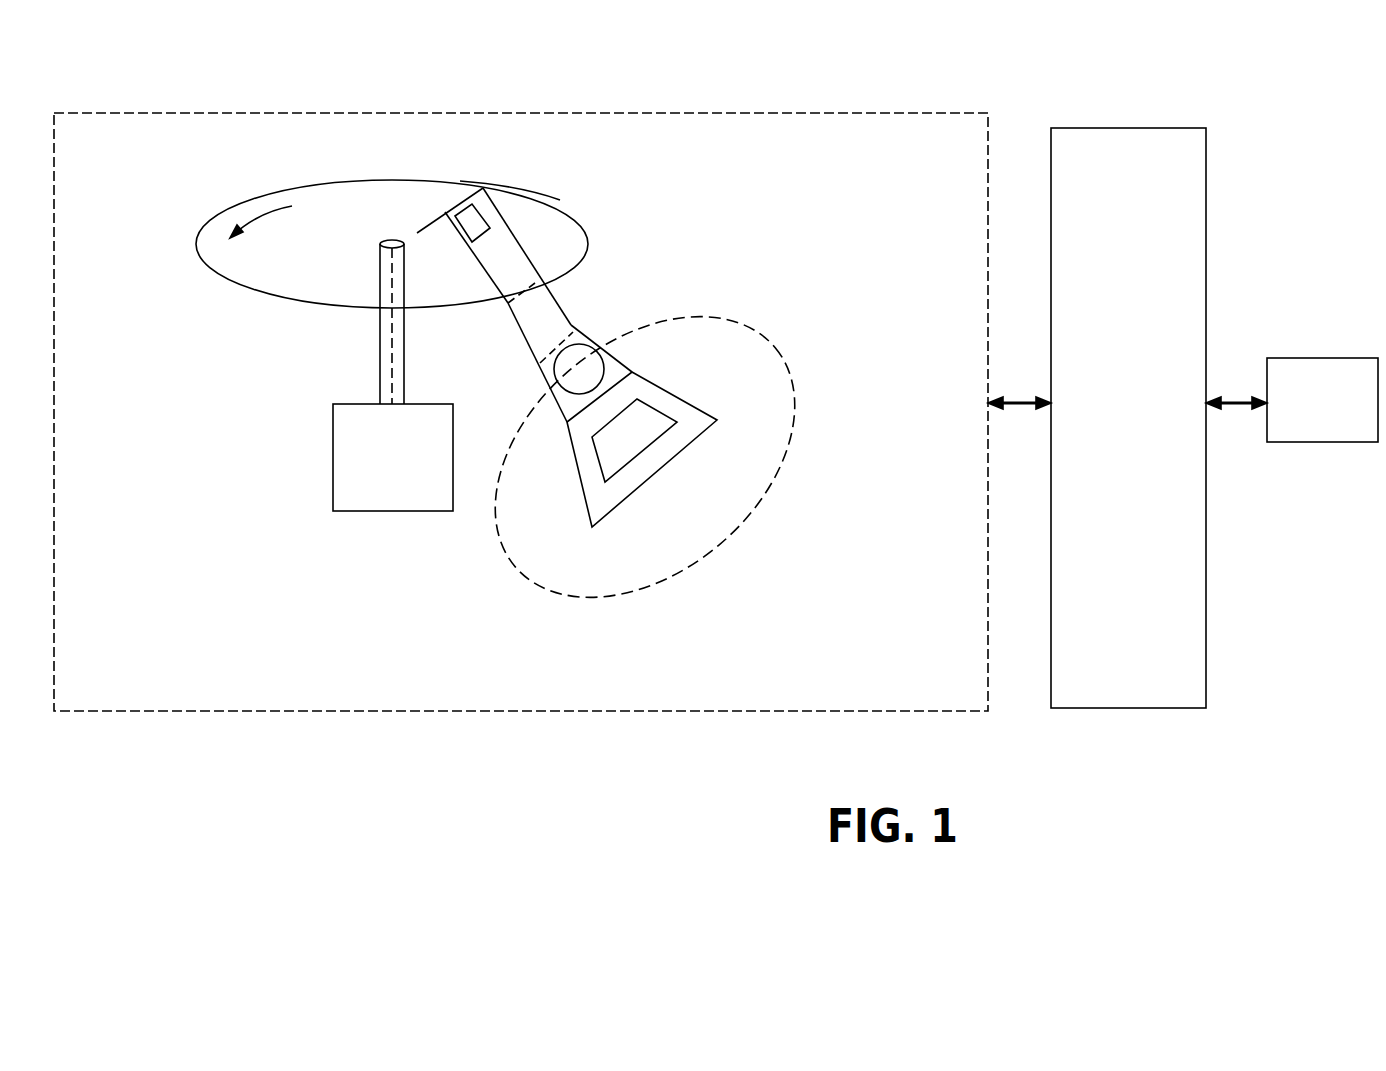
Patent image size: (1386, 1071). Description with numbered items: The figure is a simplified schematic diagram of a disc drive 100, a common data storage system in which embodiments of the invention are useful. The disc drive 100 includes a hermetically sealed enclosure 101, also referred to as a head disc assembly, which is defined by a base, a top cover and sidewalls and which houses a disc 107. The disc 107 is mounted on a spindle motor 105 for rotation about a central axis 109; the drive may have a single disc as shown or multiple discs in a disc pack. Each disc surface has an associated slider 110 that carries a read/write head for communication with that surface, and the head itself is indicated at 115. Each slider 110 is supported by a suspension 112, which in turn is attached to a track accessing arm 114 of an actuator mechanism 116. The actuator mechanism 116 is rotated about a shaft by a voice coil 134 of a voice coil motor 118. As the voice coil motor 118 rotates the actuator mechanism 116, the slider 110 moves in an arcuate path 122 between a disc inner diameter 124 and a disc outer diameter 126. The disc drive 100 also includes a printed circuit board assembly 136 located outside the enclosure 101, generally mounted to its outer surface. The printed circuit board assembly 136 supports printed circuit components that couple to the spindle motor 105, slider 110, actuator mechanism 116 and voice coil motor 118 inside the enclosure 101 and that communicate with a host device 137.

The disc drive 100 is at (1162, 62).
The enclosure 101 is at (617, 712).
The spindle motor 105 is at (333, 487).
The disc 107 is at (218, 253).
The central axis 109 is at (392, 322).
The slider 110 is at (466, 226).
The suspension 112 is at (505, 267).
The track accessing arm 114 is at (545, 318).
The read/write head slider 115 is at (466, 224).
The actuator mechanism 116 is at (548, 364).
The voice coil motor 118 is at (594, 585).
The arcuate path 122 is at (418, 233).
The disc inner diameter 124 is at (380, 243).
The disc outer diameter 126 is at (538, 198).
The voice coil 134 is at (595, 487).
The printed circuit board assembly (PCBA) 136 is at (1207, 183).
The host device 137 is at (1292, 442).